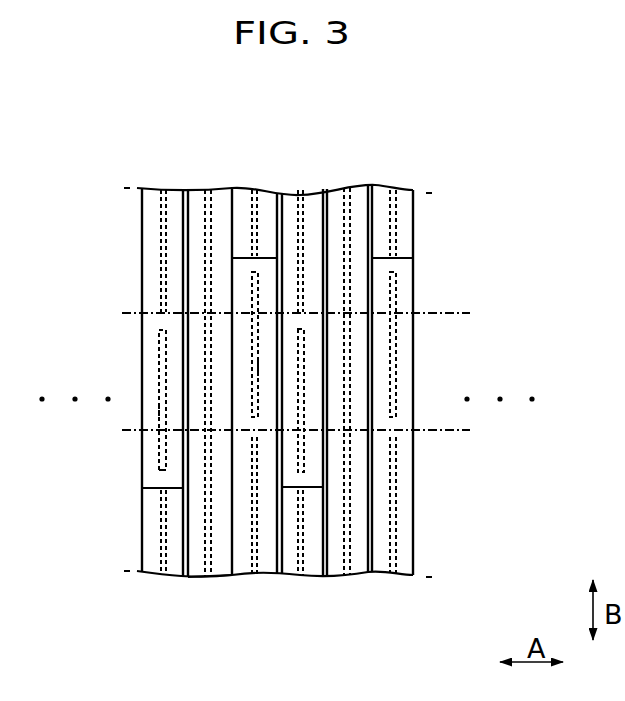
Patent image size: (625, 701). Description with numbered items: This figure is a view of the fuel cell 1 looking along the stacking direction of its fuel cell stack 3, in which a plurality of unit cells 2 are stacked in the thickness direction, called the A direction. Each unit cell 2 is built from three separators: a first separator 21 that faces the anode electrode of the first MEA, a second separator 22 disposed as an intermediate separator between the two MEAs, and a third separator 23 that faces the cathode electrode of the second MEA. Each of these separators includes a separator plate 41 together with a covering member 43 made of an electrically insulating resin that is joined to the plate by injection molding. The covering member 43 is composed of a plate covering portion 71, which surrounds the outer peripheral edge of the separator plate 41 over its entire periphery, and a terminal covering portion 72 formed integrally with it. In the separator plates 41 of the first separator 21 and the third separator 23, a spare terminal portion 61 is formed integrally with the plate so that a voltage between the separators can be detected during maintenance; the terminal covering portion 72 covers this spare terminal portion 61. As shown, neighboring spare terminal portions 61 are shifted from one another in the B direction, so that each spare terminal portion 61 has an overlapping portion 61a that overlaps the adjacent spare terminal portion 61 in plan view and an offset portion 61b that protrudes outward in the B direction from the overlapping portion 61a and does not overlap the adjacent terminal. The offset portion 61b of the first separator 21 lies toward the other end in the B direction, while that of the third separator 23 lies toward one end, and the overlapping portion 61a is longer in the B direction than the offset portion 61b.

The fuel cell 1 is at (486, 128).
The unit cell 2 is at (173, 166).
The fuel cell stack 3 is at (118, 170).
The first separator 21 is at (163, 584).
The second separator 22 is at (217, 584).
The third separator 23 is at (258, 584).
The separator plate 41 is at (253, 493).
The covering member 43 is at (268, 185).
The spare terminal portion 61 is at (254, 346).
The overlapping portion 61a is at (160, 413).
The offset portion 61b is at (160, 471).
The plate covering portion 71 is at (199, 189).
The terminal covering portion 72 is at (146, 331).